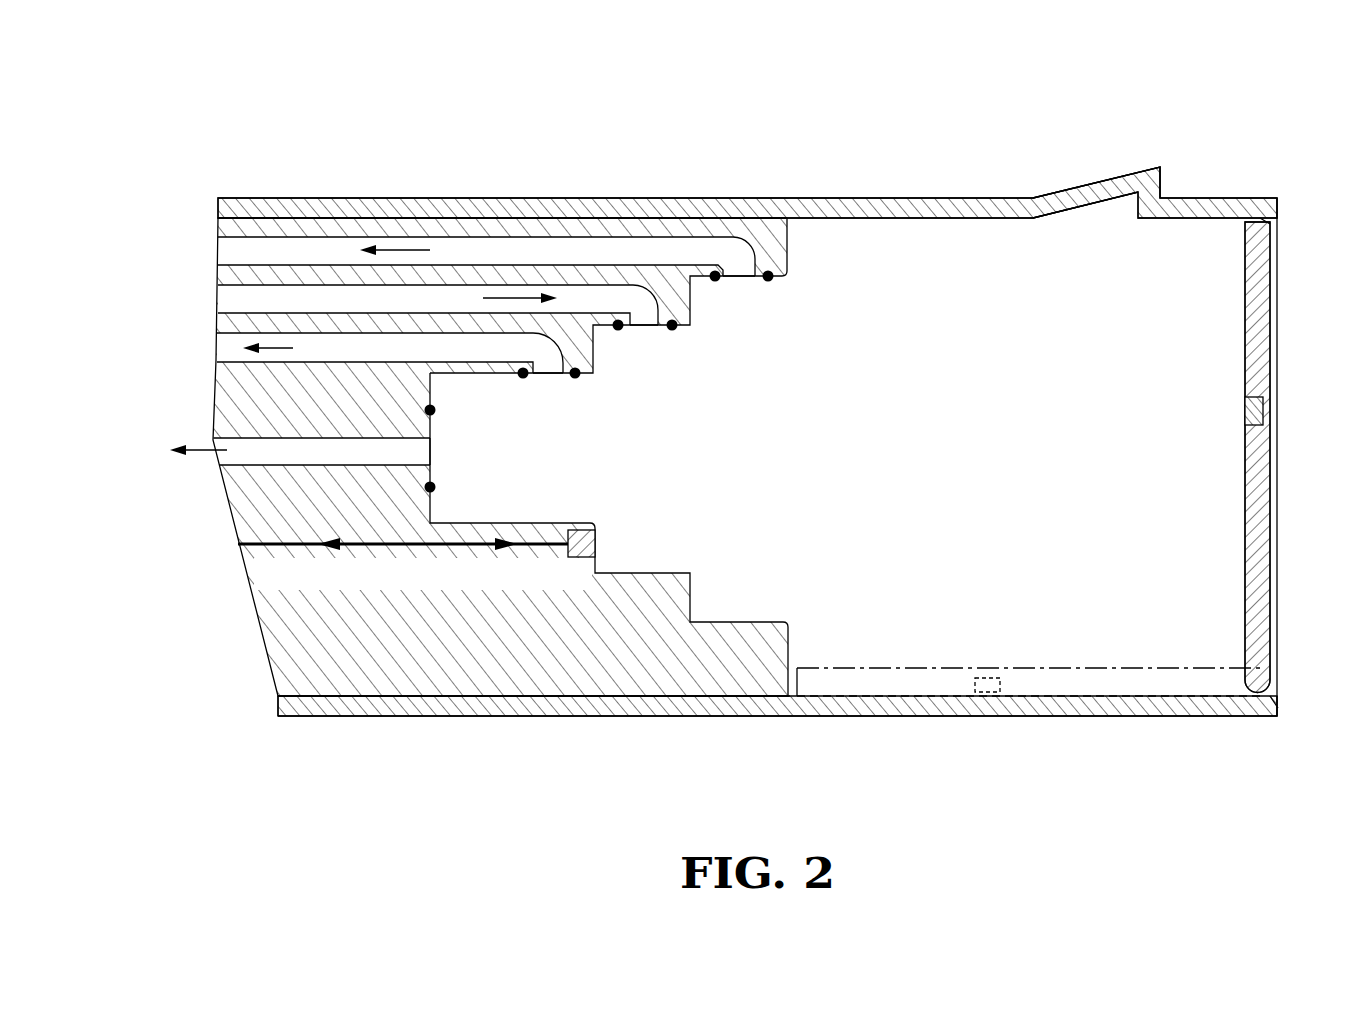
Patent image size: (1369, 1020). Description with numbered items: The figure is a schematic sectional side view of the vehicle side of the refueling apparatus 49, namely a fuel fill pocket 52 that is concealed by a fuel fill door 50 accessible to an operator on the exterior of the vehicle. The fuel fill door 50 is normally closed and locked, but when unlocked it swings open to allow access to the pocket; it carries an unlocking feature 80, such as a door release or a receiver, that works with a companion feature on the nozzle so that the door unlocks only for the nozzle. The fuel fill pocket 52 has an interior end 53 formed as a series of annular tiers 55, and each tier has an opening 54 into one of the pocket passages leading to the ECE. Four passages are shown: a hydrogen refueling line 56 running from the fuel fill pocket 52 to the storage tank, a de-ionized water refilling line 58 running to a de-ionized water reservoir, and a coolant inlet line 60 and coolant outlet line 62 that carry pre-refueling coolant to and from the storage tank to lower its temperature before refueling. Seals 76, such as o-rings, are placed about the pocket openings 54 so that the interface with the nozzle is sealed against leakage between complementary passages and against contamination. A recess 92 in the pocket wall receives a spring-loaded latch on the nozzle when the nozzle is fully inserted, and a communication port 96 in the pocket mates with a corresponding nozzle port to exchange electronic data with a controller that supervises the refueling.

The refueling apparatus 49 is at (640, 92).
The fuel fill door 50 is at (1262, 528).
The fuel fill pocket 52 is at (983, 469).
The interior end 53 is at (541, 519).
The opening 54 is at (745, 292).
The annular tier 55 is at (693, 280).
The hydrogen refueling line 56 is at (222, 436).
The de-ionized water refilling line 58 is at (234, 333).
The coolant inlet line 60 is at (236, 237).
The coolant outlet line 62 is at (234, 284).
The seal 76 is at (717, 284).
The unlocking feature 80 is at (1247, 412).
The recess 92 is at (1123, 198).
The communication port 96 is at (597, 540).